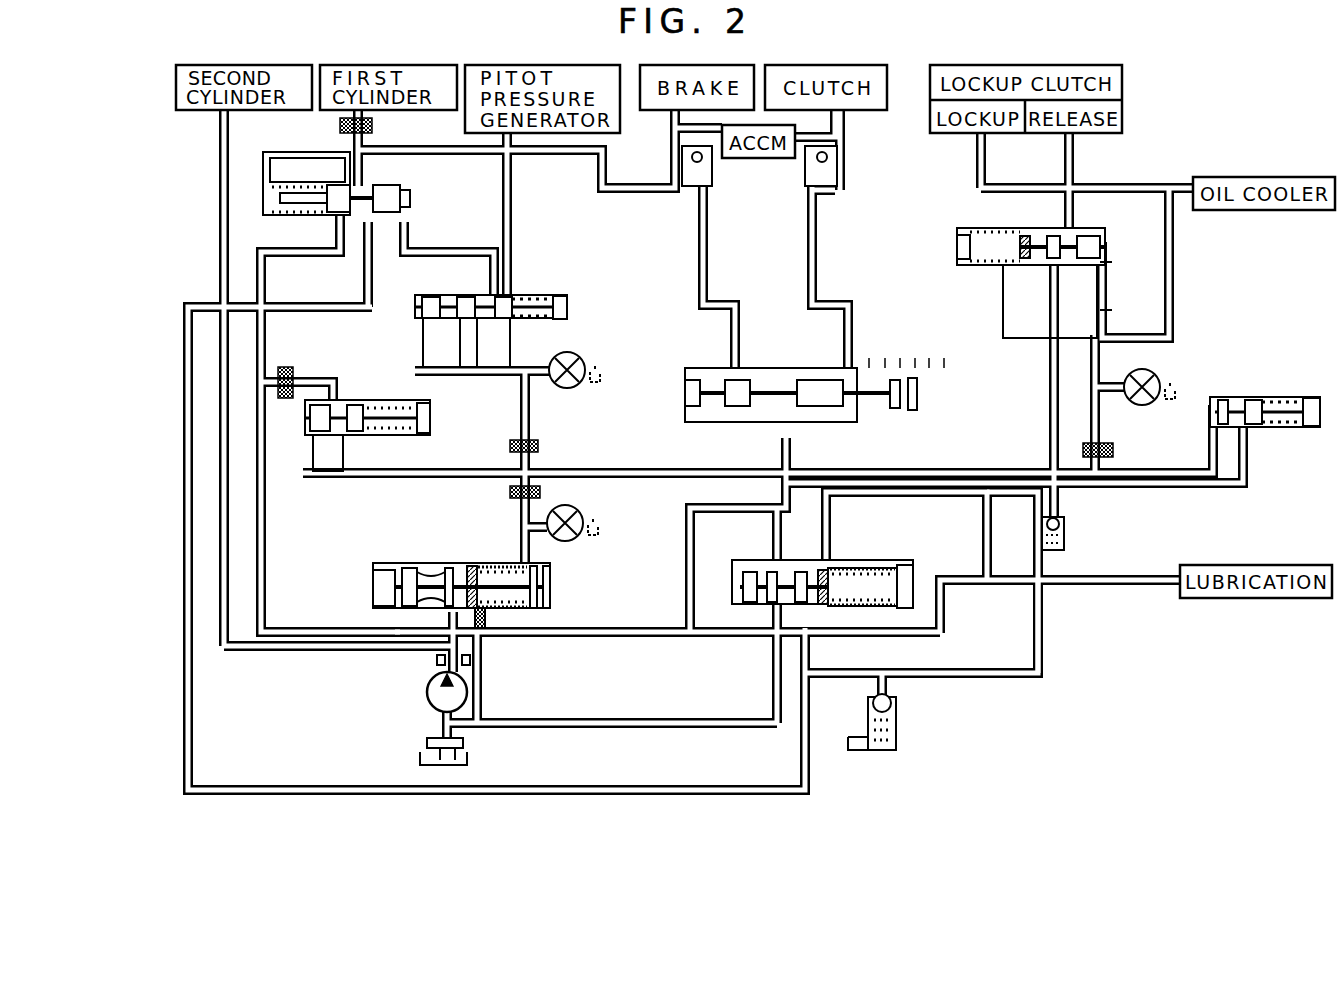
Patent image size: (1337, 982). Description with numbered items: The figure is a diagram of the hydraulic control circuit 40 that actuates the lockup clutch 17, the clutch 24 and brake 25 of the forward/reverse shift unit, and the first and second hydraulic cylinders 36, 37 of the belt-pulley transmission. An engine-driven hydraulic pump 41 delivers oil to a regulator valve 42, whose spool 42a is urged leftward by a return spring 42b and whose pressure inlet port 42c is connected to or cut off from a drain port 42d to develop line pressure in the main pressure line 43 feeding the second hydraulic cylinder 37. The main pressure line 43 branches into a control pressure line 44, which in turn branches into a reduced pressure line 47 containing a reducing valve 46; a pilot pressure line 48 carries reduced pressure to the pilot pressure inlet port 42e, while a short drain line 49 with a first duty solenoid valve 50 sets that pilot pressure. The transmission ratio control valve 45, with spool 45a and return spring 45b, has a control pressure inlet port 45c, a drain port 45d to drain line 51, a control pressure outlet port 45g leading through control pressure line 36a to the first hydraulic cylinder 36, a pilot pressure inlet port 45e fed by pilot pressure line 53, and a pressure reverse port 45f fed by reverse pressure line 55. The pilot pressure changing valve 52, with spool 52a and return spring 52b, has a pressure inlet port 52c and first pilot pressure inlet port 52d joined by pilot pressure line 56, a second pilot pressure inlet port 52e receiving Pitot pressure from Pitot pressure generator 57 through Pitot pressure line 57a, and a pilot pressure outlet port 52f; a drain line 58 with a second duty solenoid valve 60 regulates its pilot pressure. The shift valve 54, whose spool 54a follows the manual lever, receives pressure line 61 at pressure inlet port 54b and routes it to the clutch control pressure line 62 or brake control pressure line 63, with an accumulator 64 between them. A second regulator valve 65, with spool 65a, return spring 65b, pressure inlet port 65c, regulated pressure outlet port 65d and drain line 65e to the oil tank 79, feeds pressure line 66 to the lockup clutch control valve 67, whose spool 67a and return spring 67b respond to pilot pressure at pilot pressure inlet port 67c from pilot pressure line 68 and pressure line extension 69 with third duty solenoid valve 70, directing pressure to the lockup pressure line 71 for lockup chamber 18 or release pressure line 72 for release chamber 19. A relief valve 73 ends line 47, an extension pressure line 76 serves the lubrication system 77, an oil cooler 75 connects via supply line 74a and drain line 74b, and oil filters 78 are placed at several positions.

The lockup clutch 17 is at (1122, 82).
The lockup chamber 18 is at (930, 128).
The release chamber 19 is at (1122, 120).
The clutch 24 is at (870, 121).
The brake 25 is at (648, 120).
The first hydraulic cylinder 36 is at (390, 114).
The control pressure line 36a is at (350, 142).
The second hydraulic cylinder 37 is at (196, 113).
The hydraulic control circuit 40 is at (1178, 150).
The hydraulic pump 41 is at (426, 708).
The regulator valve 42 is at (487, 593).
The spool 42a is at (448, 566).
The return spring 42b is at (552, 584).
The pressure inlet port 42c is at (443, 632).
The drain port 42d is at (488, 627).
The pilot pressure inlet port 42e is at (530, 560).
The main pressure line 43 is at (313, 651).
The control pressure line 44 is at (266, 548).
The transmission ratio control valve 45 is at (334, 201).
The spool 45a is at (333, 192).
The return spring 45b is at (280, 216).
The control pressure inlet port 45c is at (336, 215).
The drain port 45d is at (364, 262).
The pilot pressure inlet port 45e is at (410, 214).
The pressure reverse port 45f is at (262, 173).
The control pressure outlet port 45g is at (366, 185).
The reducing valve 46 is at (430, 395).
The reduced pressure line 47 is at (468, 468).
The pilot pressure line 48 is at (518, 512).
The drain line 49 is at (532, 517).
The first duty solenoid valve 50 is at (578, 510).
The drain line 51 is at (302, 313).
The pilot pressure changing valve 52 is at (490, 301).
The spool 52a is at (510, 318).
The return spring 52b is at (568, 310).
The pressure inlet port 52c is at (412, 338).
The first pilot pressure inlet port 52d is at (477, 355).
The second pilot pressure inlet port 52e is at (505, 293).
The pilot pressure outlet port 52f is at (482, 290).
The pilot pressure line 53 is at (470, 253).
The shift valve 54 is at (798, 367).
The spool 54a is at (740, 378).
The pressure inlet port 54b is at (785, 433).
The reverse pressure line 55 is at (433, 146).
The pilot pressure line 56 is at (412, 373).
The Pitot pressure generator 57 is at (612, 143).
The Pitot pressure line 57a is at (513, 203).
The drain line 58 is at (533, 385).
The second duty solenoid valve 60 is at (567, 388).
The pressure line 61 is at (652, 628).
The clutch control pressure line 62 is at (818, 244).
The brake control pressure line 63 is at (710, 244).
The accumulator 64 is at (760, 160).
The regulator valve 65 is at (822, 577).
The spool 65a is at (780, 570).
The return spring 65b is at (865, 608).
The pressure inlet port 65c is at (802, 630).
The regulated pressure outlet port 65d is at (826, 560).
The drain line 65e is at (686, 716).
The pressure line 66 is at (1048, 393).
The lockup clutch control valve 67 is at (1035, 269).
The spool 67a is at (1092, 230).
The return spring 67b is at (960, 250).
The pilot pressure inlet port 67c is at (1103, 269).
The pilot pressure line 68 is at (1110, 311).
The pressure line extension 69 is at (1108, 382).
The third duty solenoid valve 70 is at (1135, 406).
The lockup pressure line 71 is at (988, 156).
The release pressure line 72 is at (1076, 156).
The relief valve 73 is at (1275, 393).
The supply line 74a is at (1175, 290).
The drain line 74b is at (1152, 186).
The oil cooler 75 is at (1268, 215).
The extension pressure line 76 is at (1083, 588).
The lubrication system 77 is at (1243, 600).
The oil filters 78 is at (338, 126).
The oil tank 79 is at (470, 760).